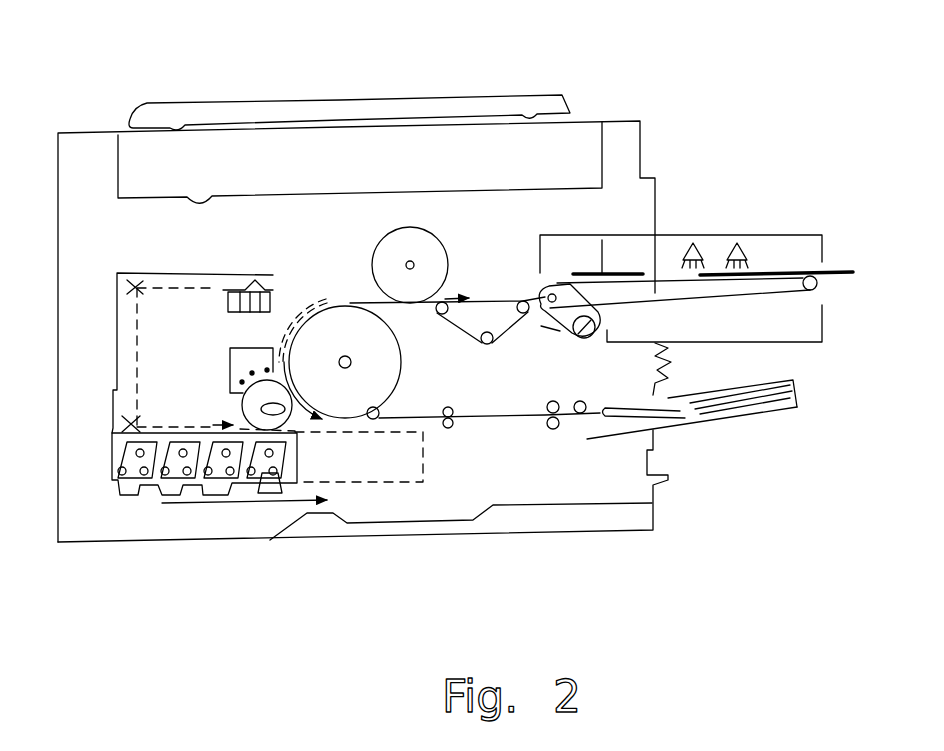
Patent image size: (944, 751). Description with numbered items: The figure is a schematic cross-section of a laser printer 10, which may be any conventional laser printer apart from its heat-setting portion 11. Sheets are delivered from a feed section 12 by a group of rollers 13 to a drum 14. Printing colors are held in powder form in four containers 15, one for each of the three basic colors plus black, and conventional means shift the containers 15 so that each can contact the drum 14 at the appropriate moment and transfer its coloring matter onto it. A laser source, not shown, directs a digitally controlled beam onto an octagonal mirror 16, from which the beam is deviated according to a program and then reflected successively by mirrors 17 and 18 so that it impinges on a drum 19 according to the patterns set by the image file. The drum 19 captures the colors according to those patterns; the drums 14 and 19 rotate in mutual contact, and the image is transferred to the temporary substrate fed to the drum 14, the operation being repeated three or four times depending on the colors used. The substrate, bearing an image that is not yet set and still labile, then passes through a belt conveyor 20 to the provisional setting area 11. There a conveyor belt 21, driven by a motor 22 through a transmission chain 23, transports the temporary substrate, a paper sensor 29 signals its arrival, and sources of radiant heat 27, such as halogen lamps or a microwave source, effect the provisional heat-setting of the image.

The laser printer 10 is at (192, 100).
The heat-setting portion 11 is at (757, 227).
The feed section 12 is at (707, 437).
The rollers 13 is at (557, 430).
The drum 14 is at (345, 370).
The containers 15 is at (213, 500).
The octagonal mirror 16 is at (257, 272).
The mirror 17 is at (117, 273).
The mirror 18 is at (113, 425).
The drum 19 is at (270, 420).
The belt conveyor 20 is at (487, 316).
The conveyor belt 21 is at (668, 280).
The motor 22 is at (576, 339).
The transmission chain 23 is at (543, 323).
The sources of radiant heat 27 is at (727, 243).
The paper sensor 29 is at (787, 250).